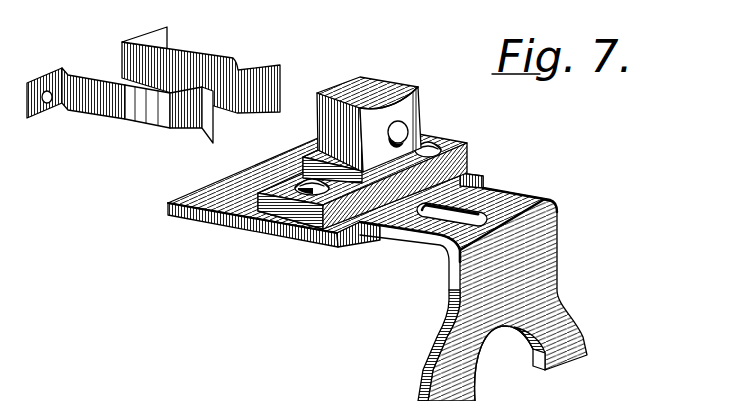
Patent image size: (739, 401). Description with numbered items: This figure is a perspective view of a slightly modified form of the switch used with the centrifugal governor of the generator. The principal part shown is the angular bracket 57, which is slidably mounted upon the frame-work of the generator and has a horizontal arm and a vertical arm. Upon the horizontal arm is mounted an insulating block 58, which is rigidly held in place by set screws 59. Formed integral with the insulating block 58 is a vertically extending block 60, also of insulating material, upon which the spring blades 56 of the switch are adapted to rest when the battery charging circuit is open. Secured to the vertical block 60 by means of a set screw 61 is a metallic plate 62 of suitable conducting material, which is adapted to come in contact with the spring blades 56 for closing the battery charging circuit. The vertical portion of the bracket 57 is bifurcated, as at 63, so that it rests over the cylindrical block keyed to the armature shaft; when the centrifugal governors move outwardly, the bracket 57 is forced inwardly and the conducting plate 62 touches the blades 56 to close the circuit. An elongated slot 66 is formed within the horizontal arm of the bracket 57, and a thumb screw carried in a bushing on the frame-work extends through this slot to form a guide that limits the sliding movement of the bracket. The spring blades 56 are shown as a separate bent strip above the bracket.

The spring blades 56 is at (168, 86).
The bracket 57 is at (557, 230).
The insulating block 58 is at (312, 219).
The set screws 59 is at (300, 178).
The vertically extending block 60 is at (347, 84).
The set screw 61 is at (410, 127).
The metallic plate 62 is at (397, 95).
The bifurcation 63 is at (550, 350).
The elongated slot 66 is at (440, 217).